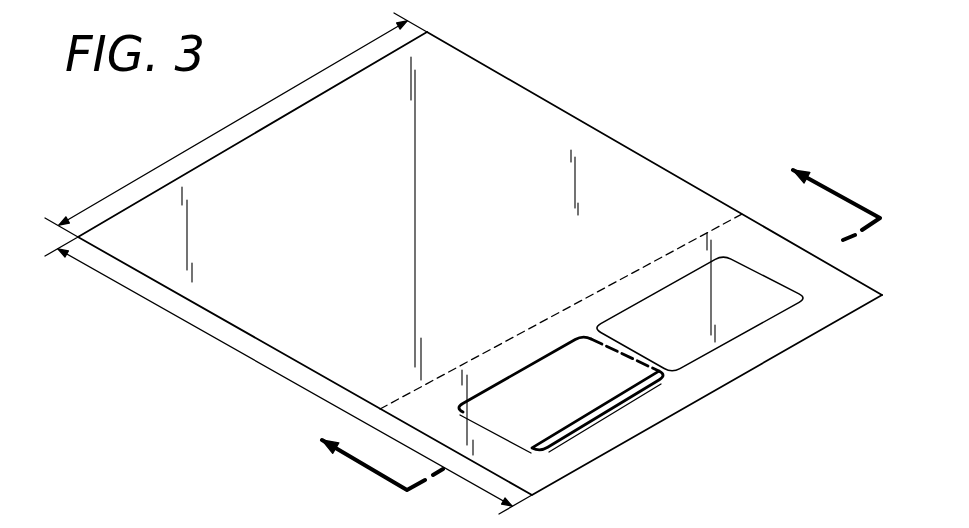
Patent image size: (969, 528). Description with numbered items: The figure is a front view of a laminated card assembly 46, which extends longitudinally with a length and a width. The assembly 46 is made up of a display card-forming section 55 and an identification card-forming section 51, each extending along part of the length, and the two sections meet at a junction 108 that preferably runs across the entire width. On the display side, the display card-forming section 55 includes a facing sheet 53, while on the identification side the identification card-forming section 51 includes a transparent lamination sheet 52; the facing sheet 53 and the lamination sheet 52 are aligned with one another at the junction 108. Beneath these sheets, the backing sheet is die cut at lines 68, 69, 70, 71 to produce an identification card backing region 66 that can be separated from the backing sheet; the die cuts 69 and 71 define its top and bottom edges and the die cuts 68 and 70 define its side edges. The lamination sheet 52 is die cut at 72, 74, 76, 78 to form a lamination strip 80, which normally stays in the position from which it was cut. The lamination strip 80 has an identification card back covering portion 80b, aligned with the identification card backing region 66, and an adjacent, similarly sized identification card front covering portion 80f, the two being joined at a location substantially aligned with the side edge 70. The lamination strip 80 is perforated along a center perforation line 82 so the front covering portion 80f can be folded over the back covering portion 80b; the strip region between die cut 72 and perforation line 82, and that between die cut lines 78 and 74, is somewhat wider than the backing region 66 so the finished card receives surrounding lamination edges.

The laminated card assembly 46 is at (463, 270).
The identification card-forming section 51 is at (813, 160).
The transparent lamination sheet 52 is at (735, 228).
The facing sheet 53 is at (635, 167).
The display card-forming section 55 is at (608, 100).
The identification card backing region 66 is at (563, 353).
The die cut 68 is at (512, 437).
The die cut 69 is at (479, 395).
The die cut 70 is at (622, 354).
The die cut 71 is at (597, 420).
The die cut 72 is at (498, 432).
The die cut 74 is at (527, 363).
The die cut 76 is at (783, 281).
The die cut 78 is at (572, 437).
The lamination strip 80 is at (820, 318).
The identification card back covering portion 80b is at (617, 412).
The identification card front covering portion 80f is at (723, 385).
The perforation line 82 is at (653, 363).
The junction 108 is at (478, 355).